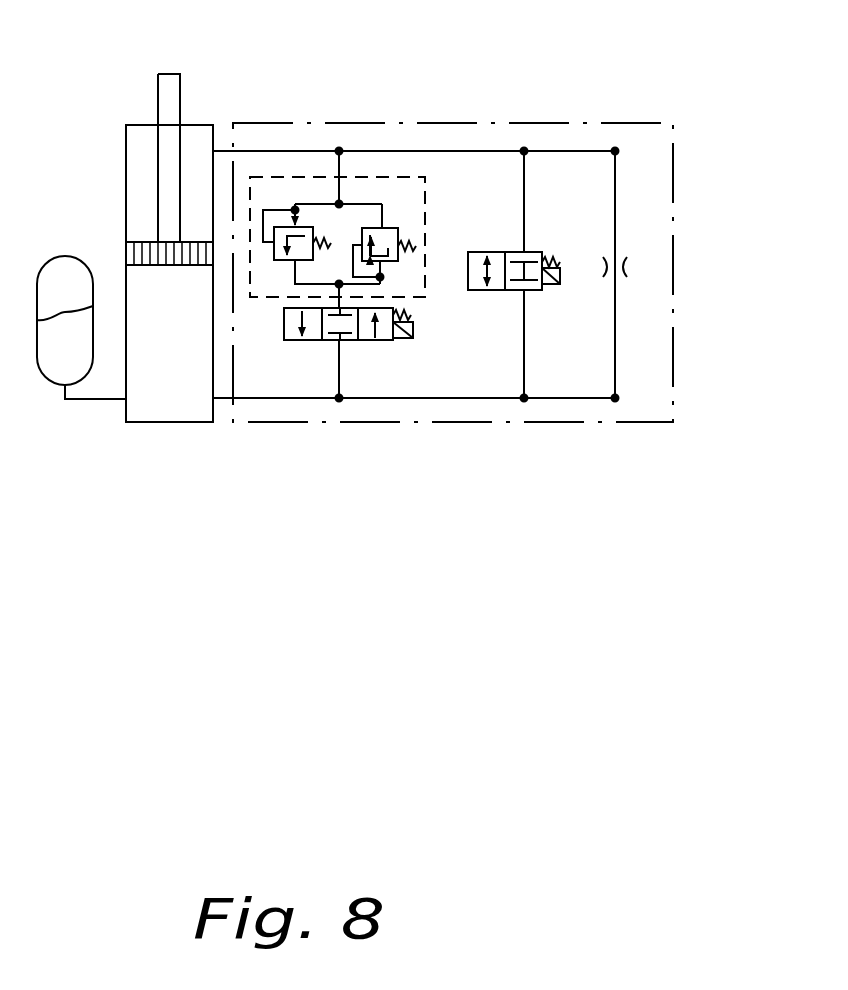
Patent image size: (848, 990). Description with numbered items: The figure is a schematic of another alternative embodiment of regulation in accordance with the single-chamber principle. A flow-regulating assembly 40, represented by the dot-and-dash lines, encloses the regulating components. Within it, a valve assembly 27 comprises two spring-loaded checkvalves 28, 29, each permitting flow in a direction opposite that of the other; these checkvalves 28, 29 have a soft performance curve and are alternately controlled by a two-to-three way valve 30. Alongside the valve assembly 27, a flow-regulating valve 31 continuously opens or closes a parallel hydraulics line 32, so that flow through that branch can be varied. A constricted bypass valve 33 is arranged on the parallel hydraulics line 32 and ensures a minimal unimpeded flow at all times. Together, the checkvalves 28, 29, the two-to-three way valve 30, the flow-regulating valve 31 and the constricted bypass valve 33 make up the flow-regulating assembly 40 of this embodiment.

The valve assembly 27 is at (433, 182).
The spring-loaded checkvalve 28 is at (297, 225).
The spring-loaded checkvalve 29 is at (390, 227).
The two-to-three way valve 30 is at (370, 343).
The flow-regulating valve 31 is at (505, 292).
The parallel hydraulics line 32 is at (525, 193).
The constricted bypass valve 33 is at (628, 267).
The flow-regulating assembly 40 is at (602, 422).